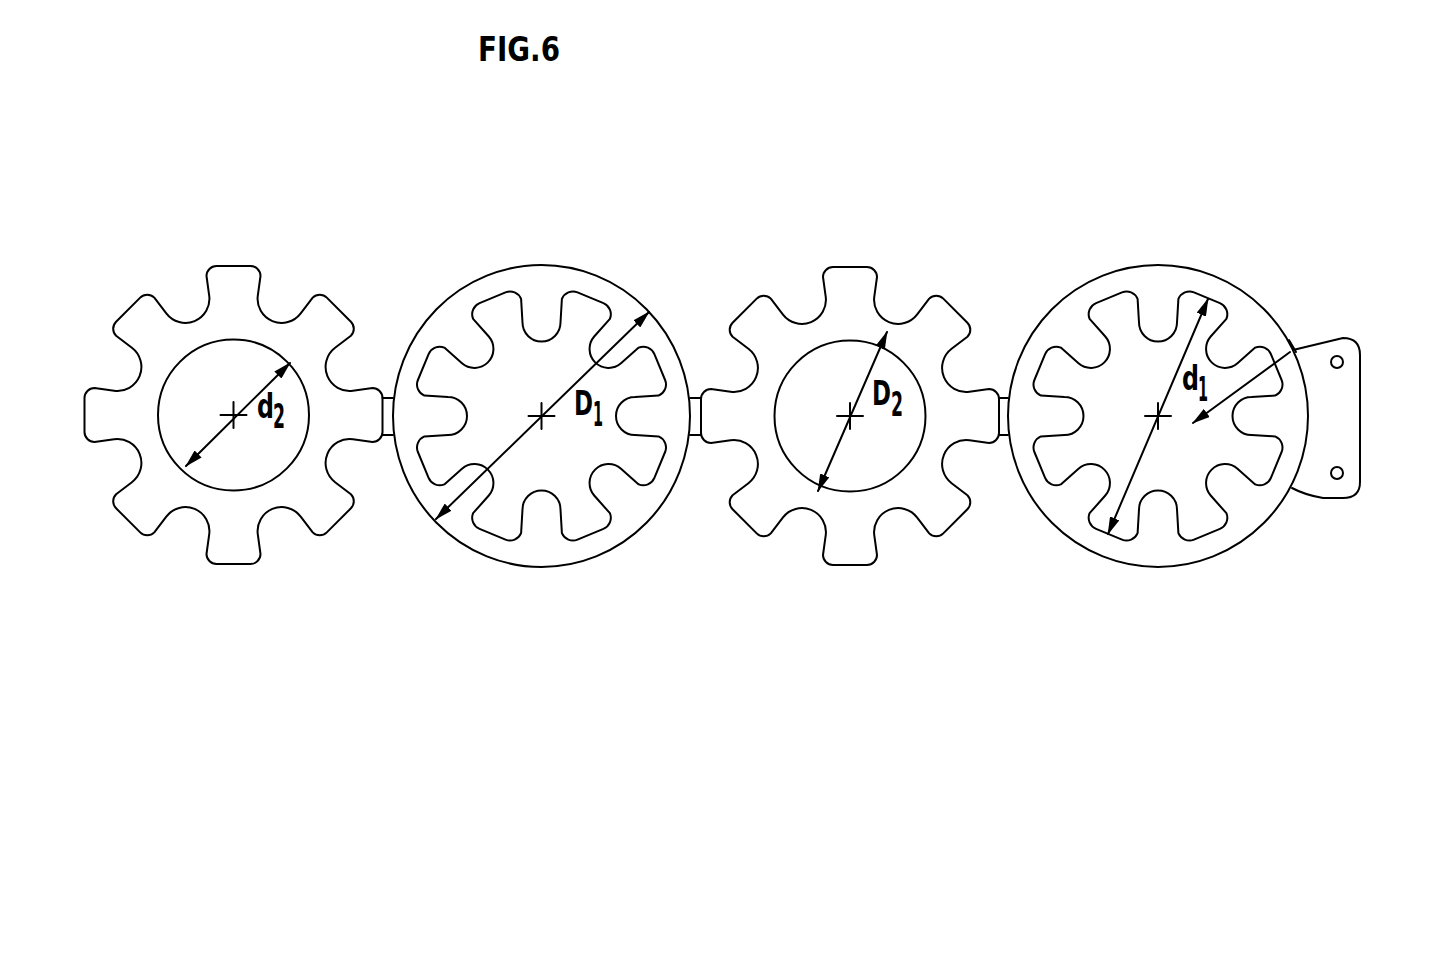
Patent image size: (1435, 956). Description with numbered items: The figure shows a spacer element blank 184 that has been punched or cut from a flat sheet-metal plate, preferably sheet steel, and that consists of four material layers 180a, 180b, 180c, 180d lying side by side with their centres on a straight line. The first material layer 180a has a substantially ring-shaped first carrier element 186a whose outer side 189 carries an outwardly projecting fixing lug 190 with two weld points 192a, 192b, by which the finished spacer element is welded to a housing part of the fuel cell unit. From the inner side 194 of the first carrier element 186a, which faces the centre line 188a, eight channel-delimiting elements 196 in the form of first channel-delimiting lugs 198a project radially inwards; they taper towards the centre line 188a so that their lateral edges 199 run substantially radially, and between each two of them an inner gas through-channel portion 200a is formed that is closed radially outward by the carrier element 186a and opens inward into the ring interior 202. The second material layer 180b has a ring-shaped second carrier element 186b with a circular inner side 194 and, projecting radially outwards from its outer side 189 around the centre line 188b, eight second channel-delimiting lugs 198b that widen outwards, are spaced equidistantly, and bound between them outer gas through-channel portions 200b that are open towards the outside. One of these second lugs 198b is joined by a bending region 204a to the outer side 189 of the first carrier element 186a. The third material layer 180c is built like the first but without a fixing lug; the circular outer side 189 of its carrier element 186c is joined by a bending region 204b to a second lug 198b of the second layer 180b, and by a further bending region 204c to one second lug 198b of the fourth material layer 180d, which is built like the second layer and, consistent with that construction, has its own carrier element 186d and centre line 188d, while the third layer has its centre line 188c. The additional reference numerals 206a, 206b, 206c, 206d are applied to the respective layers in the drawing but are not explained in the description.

The spacer element blank 184 is at (1238, 225).
The first material layer 180a is at (1158, 567).
The second material layer 180b is at (853, 566).
The third material layer 180c is at (543, 565).
The fourth material layer 180d is at (233, 565).
The first carrier element 186a is at (1197, 553).
The second carrier element 186b is at (885, 497).
The carrier element 186c is at (597, 550).
The inner contour 186d is at (277, 498).
The centre line 188a is at (1162, 432).
The centre line 188b is at (854, 432).
The axis of rotation 188c is at (546, 432).
The axis of rotation 188d is at (239, 431).
The outer side 189 is at (655, 330).
The fixing lug 190 is at (1348, 410).
The weld point 192a is at (1345, 362).
The weld point 192b is at (1345, 473).
The inner side 194 is at (812, 434).
The channel-delimiting elements 196 is at (318, 312).
The first channel-delimiting lugs 198a is at (541, 325).
The second channel-delimiting lugs 198b is at (237, 282).
The lateral edges 199 is at (803, 282).
The inner gas through-channel portion 200a is at (510, 324).
The outer gas through-channel portion 200b is at (205, 310).
The ring interior 202 is at (1295, 348).
The bending region 204a is at (1003, 432).
The bending region 204b is at (698, 432).
The bending region 204c is at (386, 430).
The outer contour 206a is at (1092, 548).
The outer contour 206b is at (773, 520).
The outer contour 206c is at (490, 550).
The outer contour 206d is at (165, 510).